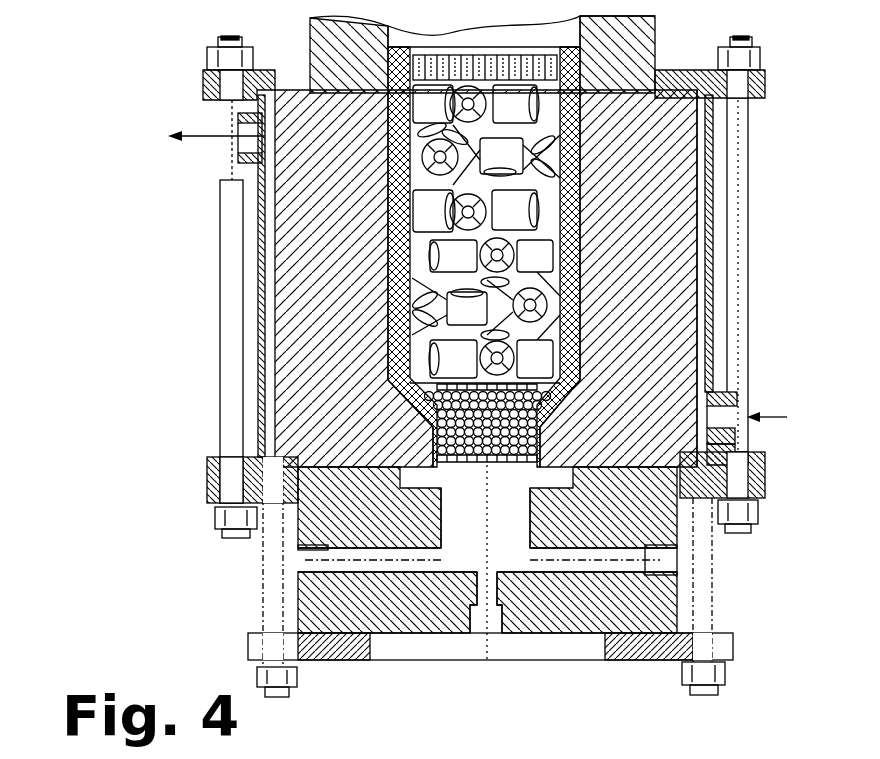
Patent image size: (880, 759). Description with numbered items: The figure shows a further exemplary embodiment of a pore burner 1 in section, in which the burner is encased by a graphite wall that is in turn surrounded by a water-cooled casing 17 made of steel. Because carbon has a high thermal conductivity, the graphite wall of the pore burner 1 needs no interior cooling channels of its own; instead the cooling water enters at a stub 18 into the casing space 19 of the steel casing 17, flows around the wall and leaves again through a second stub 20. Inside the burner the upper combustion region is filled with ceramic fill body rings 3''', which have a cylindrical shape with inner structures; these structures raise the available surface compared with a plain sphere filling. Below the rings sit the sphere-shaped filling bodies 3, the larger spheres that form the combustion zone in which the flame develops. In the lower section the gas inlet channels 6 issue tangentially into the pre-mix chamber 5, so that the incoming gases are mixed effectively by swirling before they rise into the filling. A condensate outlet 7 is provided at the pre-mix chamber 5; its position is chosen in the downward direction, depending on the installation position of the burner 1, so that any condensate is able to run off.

The pore burner 1 is at (172, 308).
The sphere-shaped filling bodies 3 is at (372, 413).
The ceramic fill body rings 3''' is at (366, 231).
The pre-mix chamber 5 is at (508, 548).
The gas inlet channels 6 is at (303, 558).
The condensate outlet 7 is at (480, 627).
The water-cooled casing 17 is at (712, 290).
The stub 18 is at (737, 392).
The casing space 19 is at (700, 190).
The stub 20 is at (228, 147).